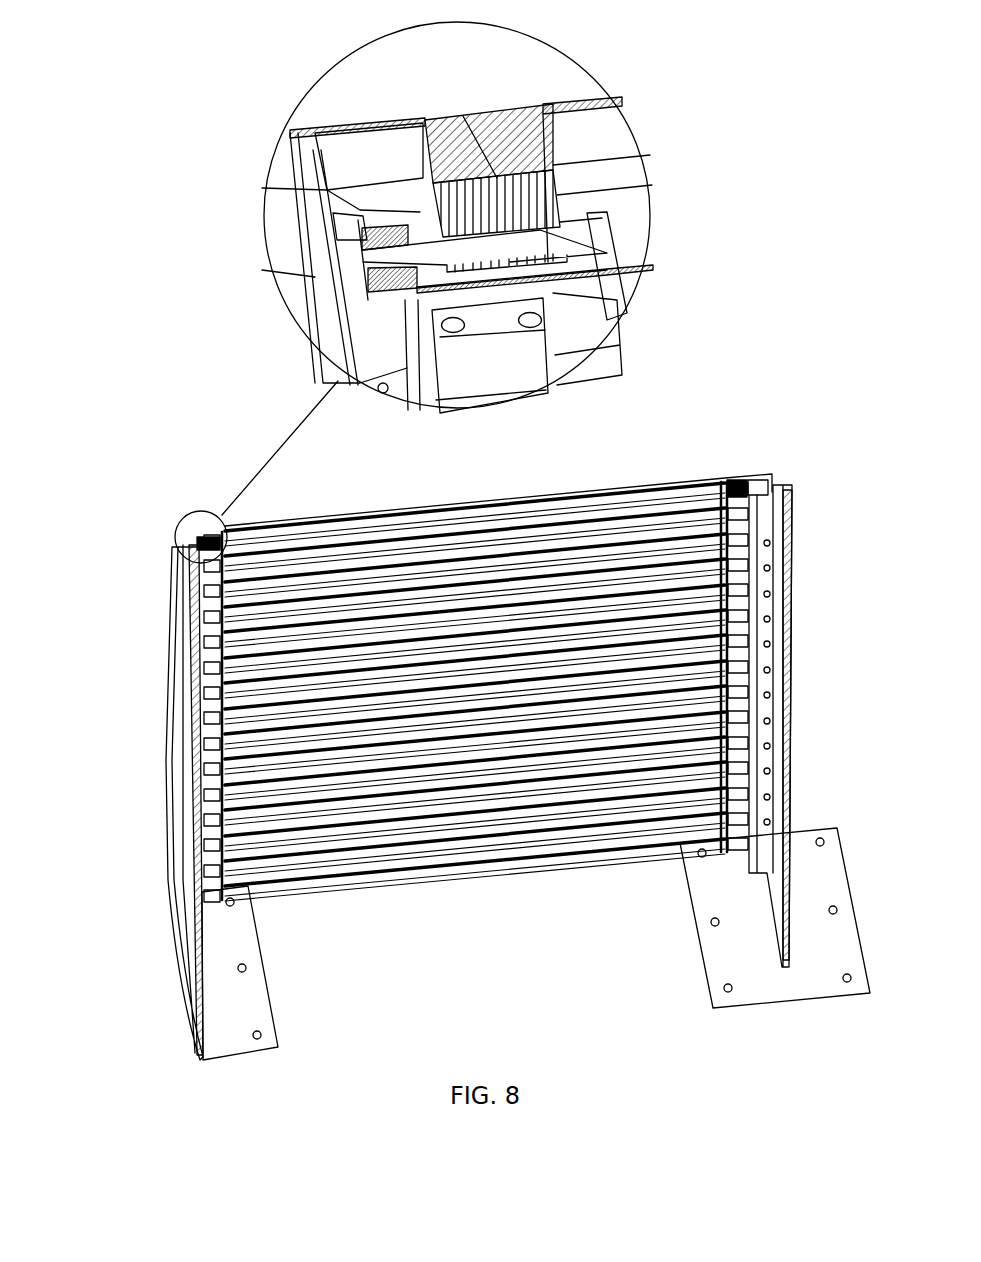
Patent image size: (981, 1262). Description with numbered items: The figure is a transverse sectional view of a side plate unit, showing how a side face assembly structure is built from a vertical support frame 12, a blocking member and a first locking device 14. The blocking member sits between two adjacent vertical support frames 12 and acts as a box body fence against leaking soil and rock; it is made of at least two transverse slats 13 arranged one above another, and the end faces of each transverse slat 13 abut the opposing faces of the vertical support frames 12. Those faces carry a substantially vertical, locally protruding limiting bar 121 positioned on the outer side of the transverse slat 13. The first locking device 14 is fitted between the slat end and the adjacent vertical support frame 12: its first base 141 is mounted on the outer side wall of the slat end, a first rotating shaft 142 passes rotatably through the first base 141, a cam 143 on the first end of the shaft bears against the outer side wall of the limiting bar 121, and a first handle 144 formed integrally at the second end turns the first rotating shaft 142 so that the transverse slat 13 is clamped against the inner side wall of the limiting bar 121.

The vertical support frame 12 is at (310, 283).
The limiting bar 121 is at (262, 188).
The transverse slat 13 is at (354, 128).
The first locking device 14 is at (203, 750).
The first base 141 is at (486, 172).
The first rotating shaft 142 is at (545, 292).
The cam 143 is at (395, 296).
The first handle 144 is at (630, 290).